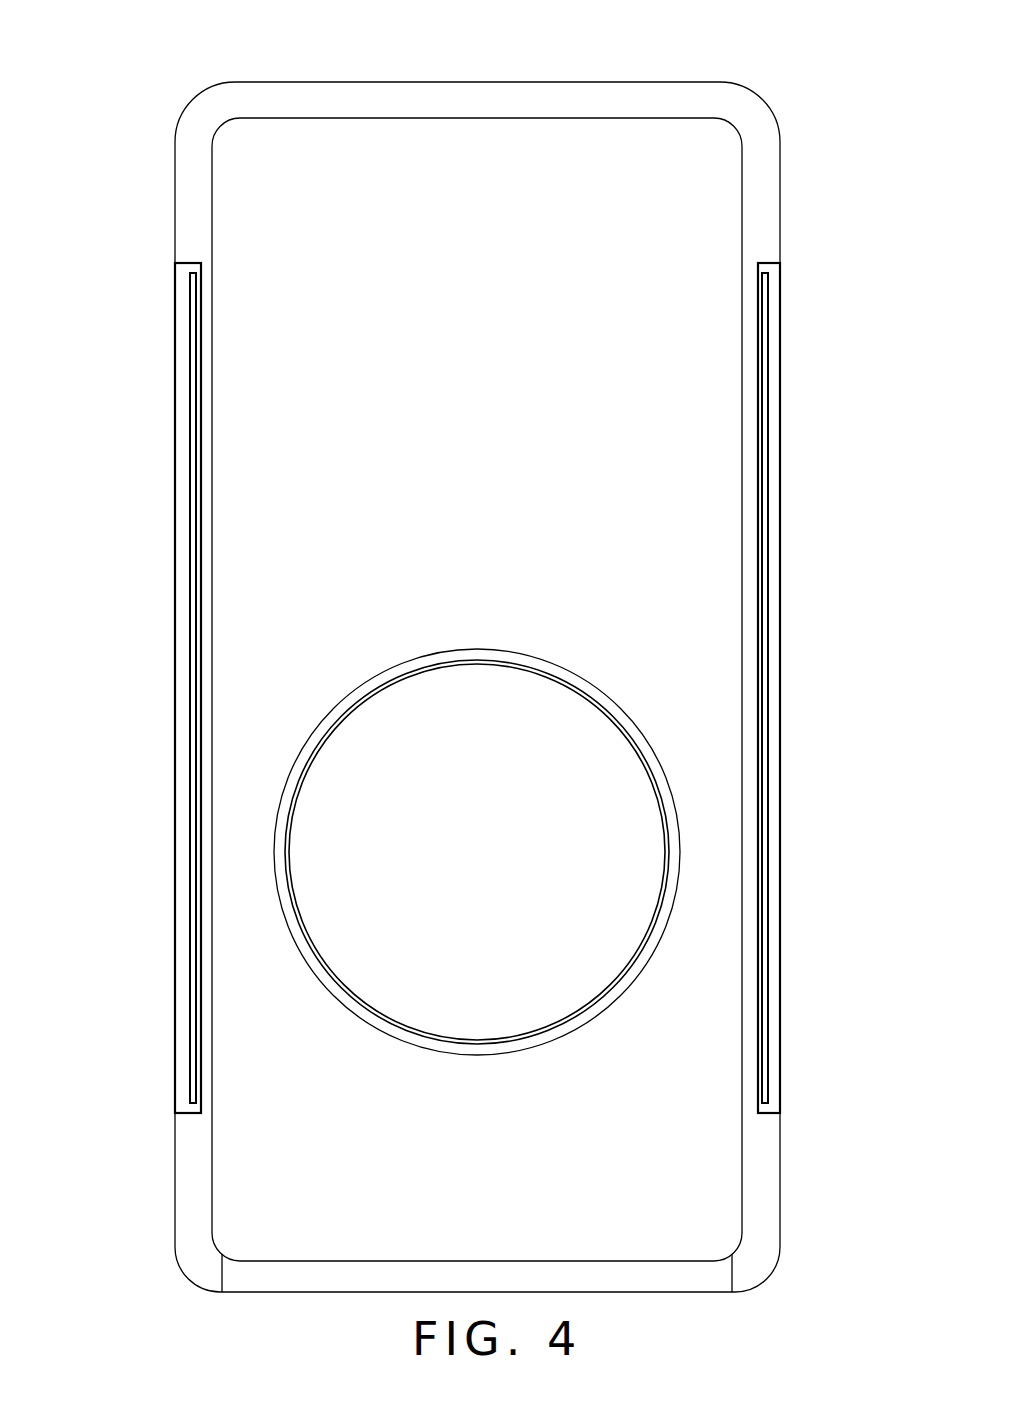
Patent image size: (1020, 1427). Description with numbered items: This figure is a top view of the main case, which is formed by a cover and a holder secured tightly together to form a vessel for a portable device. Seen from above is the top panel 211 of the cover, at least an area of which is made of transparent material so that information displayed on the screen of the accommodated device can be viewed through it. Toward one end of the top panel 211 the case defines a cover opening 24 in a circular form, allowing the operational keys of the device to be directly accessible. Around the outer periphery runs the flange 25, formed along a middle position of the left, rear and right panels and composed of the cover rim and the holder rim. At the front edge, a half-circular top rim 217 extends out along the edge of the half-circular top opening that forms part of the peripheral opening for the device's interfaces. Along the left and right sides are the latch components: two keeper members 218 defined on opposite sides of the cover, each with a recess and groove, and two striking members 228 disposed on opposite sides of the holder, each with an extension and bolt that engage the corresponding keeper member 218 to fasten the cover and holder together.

The cover opening 24 is at (622, 718).
The flange 25 is at (595, 100).
The top panel 211 is at (480, 157).
The half-circular top rim 217 is at (702, 1277).
The keeper member 218 is at (192, 353).
The striking member 228 is at (192, 917).